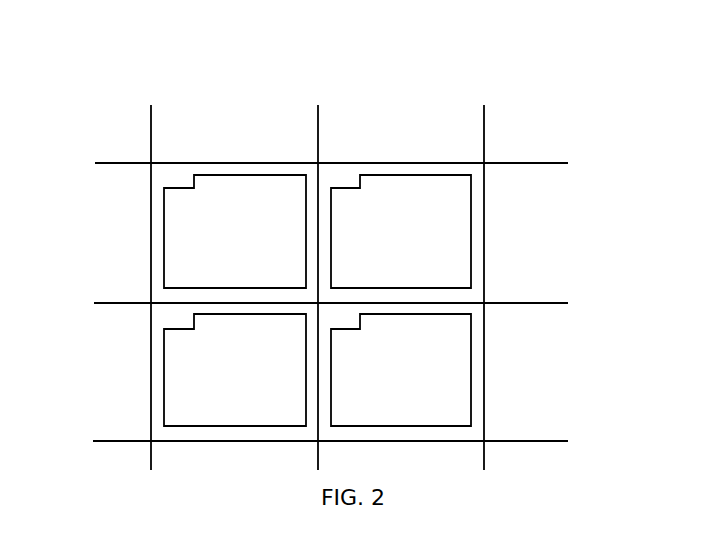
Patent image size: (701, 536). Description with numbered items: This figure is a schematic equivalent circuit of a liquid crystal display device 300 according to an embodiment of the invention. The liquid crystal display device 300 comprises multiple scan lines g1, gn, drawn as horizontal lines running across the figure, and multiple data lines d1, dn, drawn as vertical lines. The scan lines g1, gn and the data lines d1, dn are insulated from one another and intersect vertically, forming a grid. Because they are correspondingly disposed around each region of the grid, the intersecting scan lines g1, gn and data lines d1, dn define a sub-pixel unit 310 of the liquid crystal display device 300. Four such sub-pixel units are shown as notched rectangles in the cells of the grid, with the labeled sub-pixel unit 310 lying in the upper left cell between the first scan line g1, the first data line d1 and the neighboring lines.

The liquid crystal display device 300 is at (337, 52).
The sub-pixel unit 310 is at (235, 231).
The data line d1 is at (146, 274).
The data line dn is at (482, 274).
The scan line g1 is at (315, 166).
The scan line gn is at (315, 439).